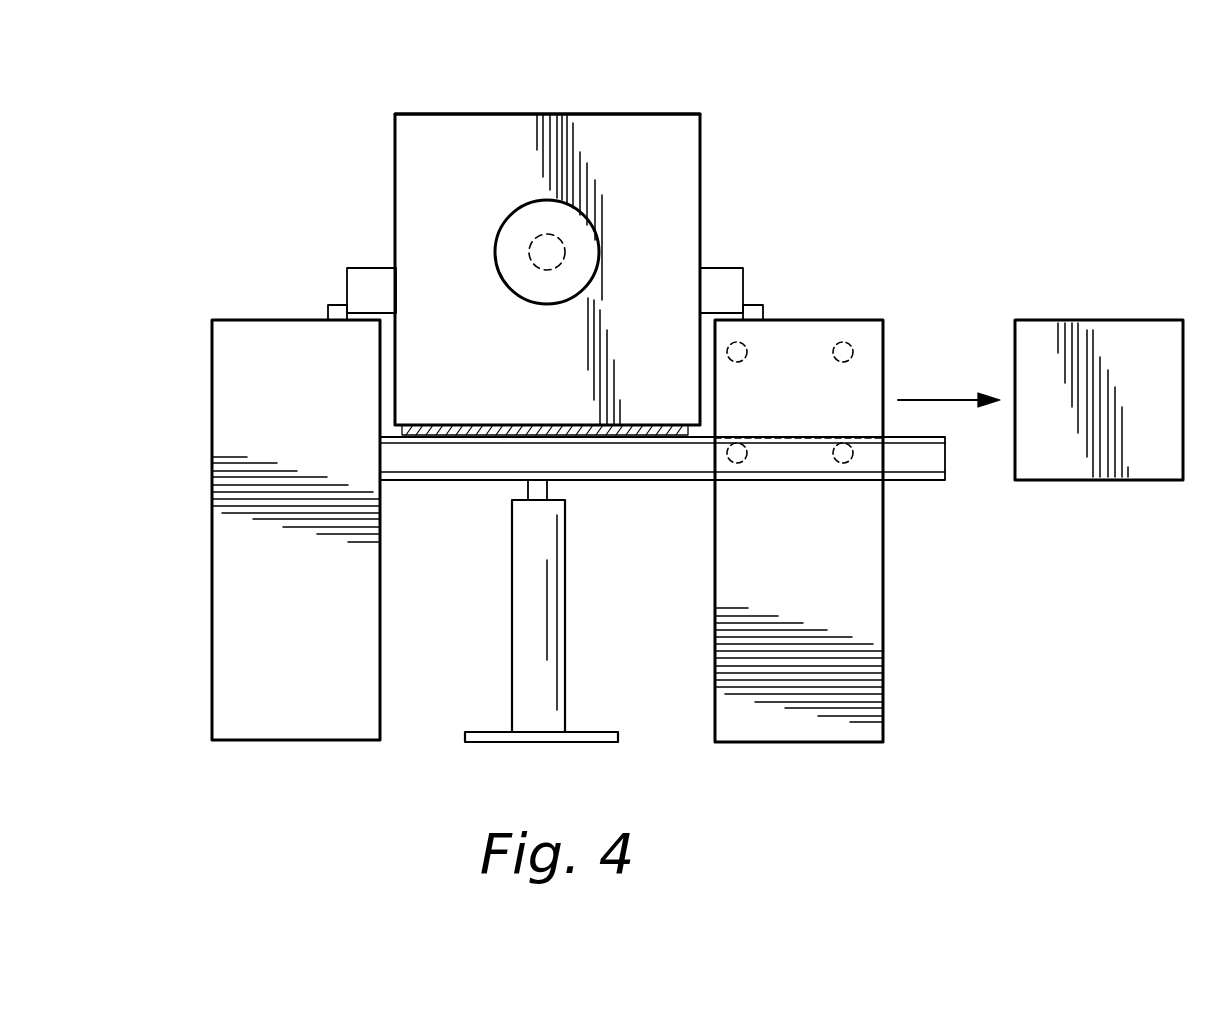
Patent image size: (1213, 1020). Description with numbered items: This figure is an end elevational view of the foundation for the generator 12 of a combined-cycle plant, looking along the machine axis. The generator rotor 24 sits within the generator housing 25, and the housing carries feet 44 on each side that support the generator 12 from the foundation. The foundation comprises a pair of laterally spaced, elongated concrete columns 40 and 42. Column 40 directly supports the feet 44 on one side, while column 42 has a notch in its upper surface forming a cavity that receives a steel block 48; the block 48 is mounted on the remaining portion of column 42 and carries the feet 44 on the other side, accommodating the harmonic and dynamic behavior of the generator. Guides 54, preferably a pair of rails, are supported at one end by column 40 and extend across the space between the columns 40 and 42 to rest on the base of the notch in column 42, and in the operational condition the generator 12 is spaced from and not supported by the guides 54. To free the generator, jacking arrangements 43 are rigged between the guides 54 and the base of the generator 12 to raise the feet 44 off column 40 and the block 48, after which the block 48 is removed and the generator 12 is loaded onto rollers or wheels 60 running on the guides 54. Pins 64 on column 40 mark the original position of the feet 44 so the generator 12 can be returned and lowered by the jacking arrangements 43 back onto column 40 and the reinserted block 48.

The generator 12 is at (446, 135).
The generator housing 25 is at (615, 114).
The generator rotor 24 is at (527, 240).
The pins 64 is at (336, 305).
The feet 44 is at (728, 268).
The column 40 is at (258, 655).
The column 42 is at (857, 545).
The rollers or wheels 60 is at (418, 438).
The guides 54 is at (658, 462).
The jacking arrangements 43 is at (512, 560).
The block 48 is at (1080, 320).